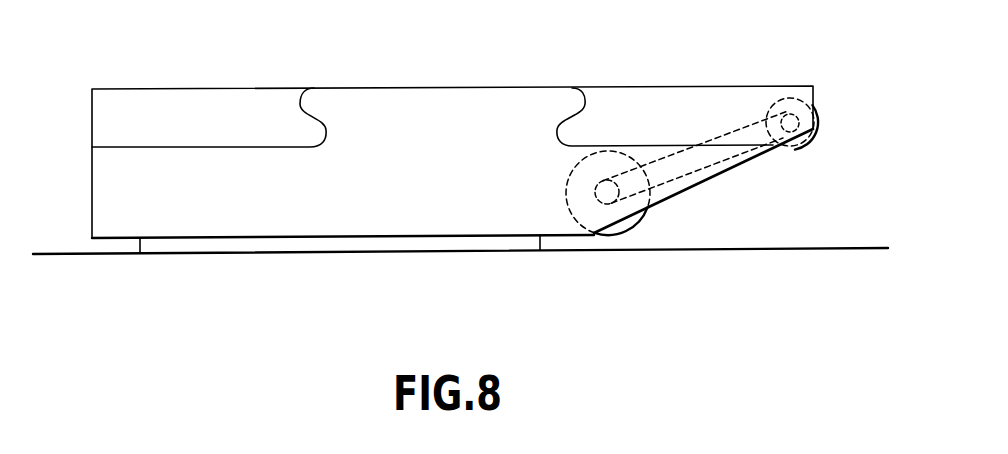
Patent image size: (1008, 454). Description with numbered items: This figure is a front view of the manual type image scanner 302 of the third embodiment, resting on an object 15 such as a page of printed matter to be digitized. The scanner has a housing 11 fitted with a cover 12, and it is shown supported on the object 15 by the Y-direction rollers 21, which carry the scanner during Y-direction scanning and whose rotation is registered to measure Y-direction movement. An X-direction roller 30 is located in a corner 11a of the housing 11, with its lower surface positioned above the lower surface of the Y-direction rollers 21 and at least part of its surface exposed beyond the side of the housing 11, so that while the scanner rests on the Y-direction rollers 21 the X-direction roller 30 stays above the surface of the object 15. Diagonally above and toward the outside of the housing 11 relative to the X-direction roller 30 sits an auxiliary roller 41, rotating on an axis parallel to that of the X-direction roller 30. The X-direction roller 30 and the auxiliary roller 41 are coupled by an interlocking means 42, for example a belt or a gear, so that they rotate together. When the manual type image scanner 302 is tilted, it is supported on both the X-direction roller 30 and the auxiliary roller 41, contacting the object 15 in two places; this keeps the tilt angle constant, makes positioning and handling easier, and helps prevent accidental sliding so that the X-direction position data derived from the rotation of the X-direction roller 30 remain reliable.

The manual type image scanner 302 is at (281, 59).
The housing 11 is at (118, 188).
The corner 11a is at (632, 206).
The cover 12 is at (452, 105).
The object 15 is at (704, 251).
The Y-direction rollers 21 is at (280, 243).
The X-direction roller 30 is at (618, 236).
The auxiliary roller 41 is at (806, 146).
The interlocking means 42 is at (732, 132).